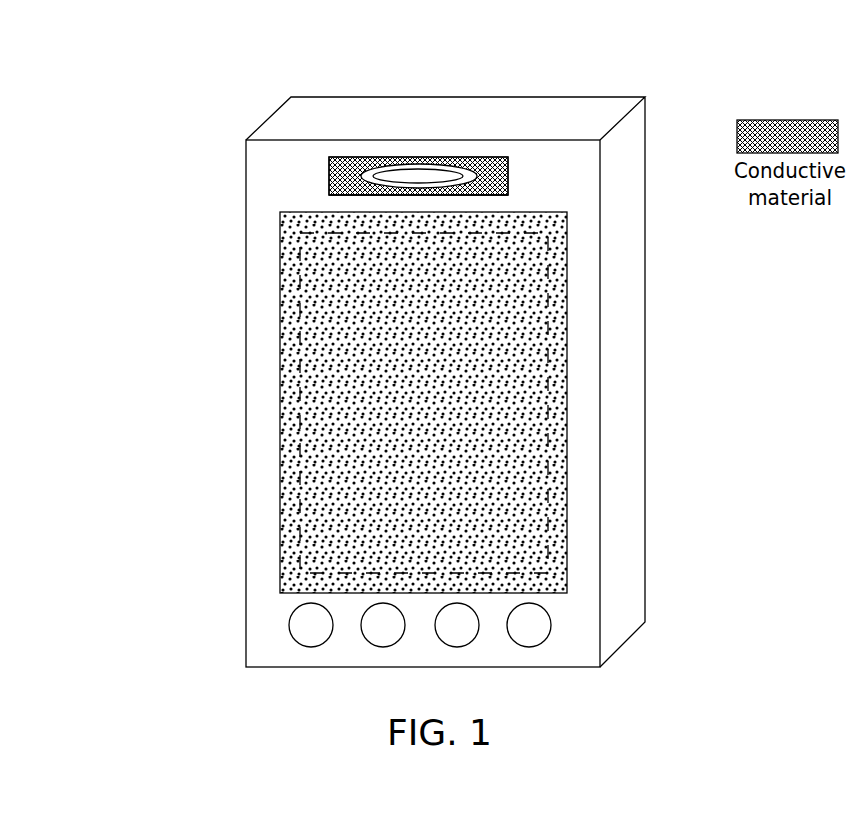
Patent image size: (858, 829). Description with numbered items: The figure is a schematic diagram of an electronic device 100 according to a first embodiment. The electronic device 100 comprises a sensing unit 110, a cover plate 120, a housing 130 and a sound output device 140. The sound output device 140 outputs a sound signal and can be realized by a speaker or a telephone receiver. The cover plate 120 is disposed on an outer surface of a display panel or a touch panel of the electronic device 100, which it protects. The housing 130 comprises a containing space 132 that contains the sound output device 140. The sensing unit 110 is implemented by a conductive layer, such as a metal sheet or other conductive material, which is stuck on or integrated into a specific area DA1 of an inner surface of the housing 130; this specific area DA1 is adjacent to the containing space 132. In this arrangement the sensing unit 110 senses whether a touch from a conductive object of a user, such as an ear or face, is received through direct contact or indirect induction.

The electronic device 100 is at (441, 343).
The sensing unit 110 is at (351, 157).
The cover plate 120 is at (299, 394).
The housing 130 is at (266, 179).
The containing space 132 is at (473, 157).
The sound output device 140 is at (418, 176).
The specific area DA1 is at (423, 195).